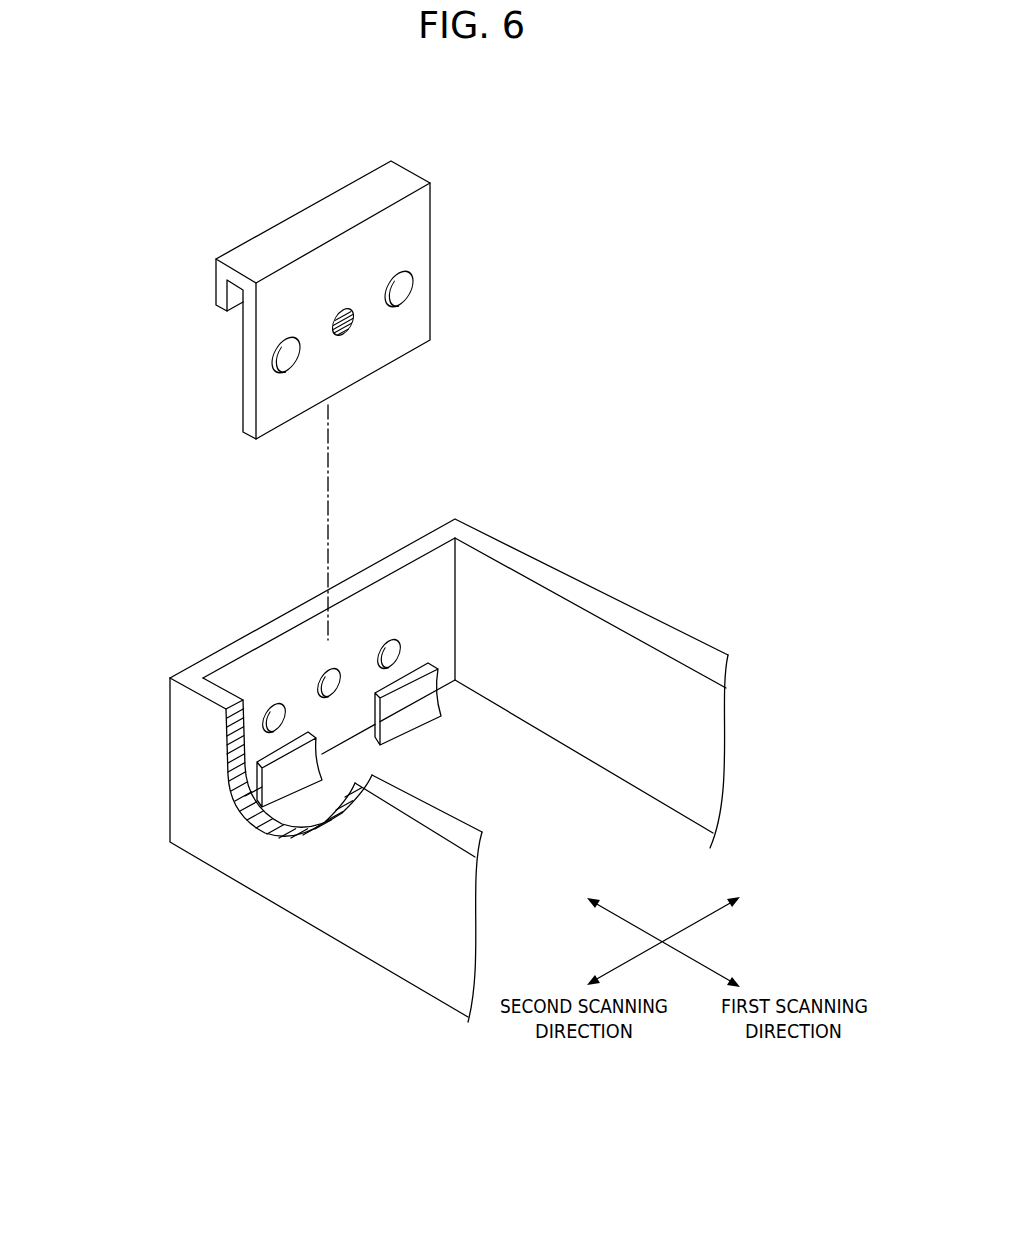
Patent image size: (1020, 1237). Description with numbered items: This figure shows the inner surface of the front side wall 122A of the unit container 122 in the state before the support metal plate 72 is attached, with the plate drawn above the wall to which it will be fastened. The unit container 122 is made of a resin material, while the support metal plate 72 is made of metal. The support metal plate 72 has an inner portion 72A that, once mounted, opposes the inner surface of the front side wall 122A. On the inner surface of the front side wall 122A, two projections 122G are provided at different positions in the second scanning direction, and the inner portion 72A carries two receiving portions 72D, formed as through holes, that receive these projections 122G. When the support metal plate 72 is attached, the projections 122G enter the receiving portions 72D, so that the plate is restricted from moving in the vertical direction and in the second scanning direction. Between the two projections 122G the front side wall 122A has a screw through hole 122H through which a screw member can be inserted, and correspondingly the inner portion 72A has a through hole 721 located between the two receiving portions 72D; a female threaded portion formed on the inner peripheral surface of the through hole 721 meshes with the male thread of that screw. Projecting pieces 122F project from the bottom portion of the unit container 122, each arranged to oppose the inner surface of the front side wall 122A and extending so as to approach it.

The support metal plate 72 is at (458, 177).
The inner portion 72A is at (398, 344).
The receiving portions 72D is at (404, 291).
The through hole 721 is at (349, 328).
The unit container 122 is at (578, 550).
The front side wall 122A is at (302, 559).
The projecting pieces 122F is at (428, 690).
The projections 122G is at (390, 641).
The screw through hole 122H is at (330, 672).